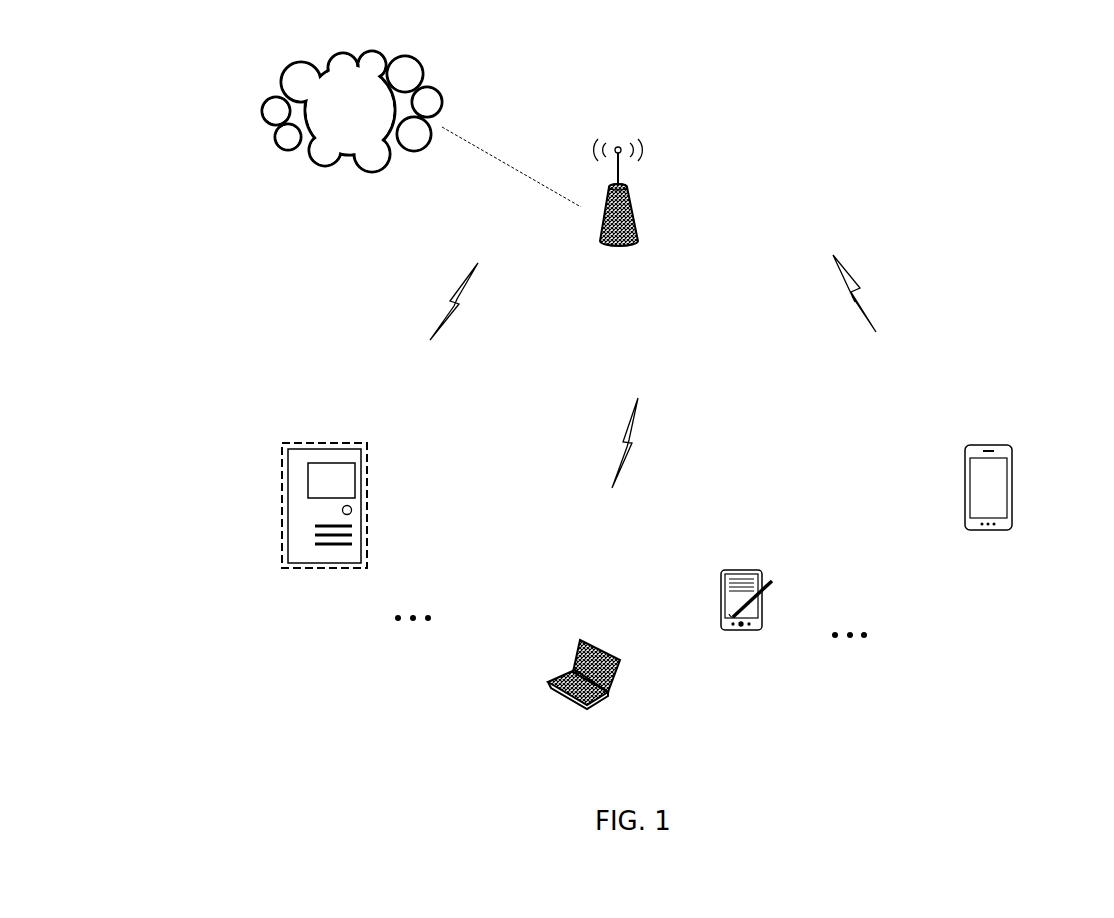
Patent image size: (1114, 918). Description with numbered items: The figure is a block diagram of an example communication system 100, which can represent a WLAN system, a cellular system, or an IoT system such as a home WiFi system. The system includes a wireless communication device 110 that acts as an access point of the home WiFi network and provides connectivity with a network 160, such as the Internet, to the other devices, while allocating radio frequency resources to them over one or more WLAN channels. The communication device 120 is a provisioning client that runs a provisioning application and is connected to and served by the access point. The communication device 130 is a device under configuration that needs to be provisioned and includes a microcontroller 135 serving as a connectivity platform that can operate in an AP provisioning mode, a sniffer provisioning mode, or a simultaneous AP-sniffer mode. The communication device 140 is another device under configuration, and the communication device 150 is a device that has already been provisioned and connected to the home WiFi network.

The communication system 100 is at (187, 69).
The wireless communication device 110 is at (660, 181).
The communication device 120 is at (1038, 484).
The communication device 130 is at (329, 498).
The microcontroller 135 is at (342, 475).
The communication device 140 is at (543, 670).
The communication device 150 is at (736, 537).
The network 160 is at (325, 162).